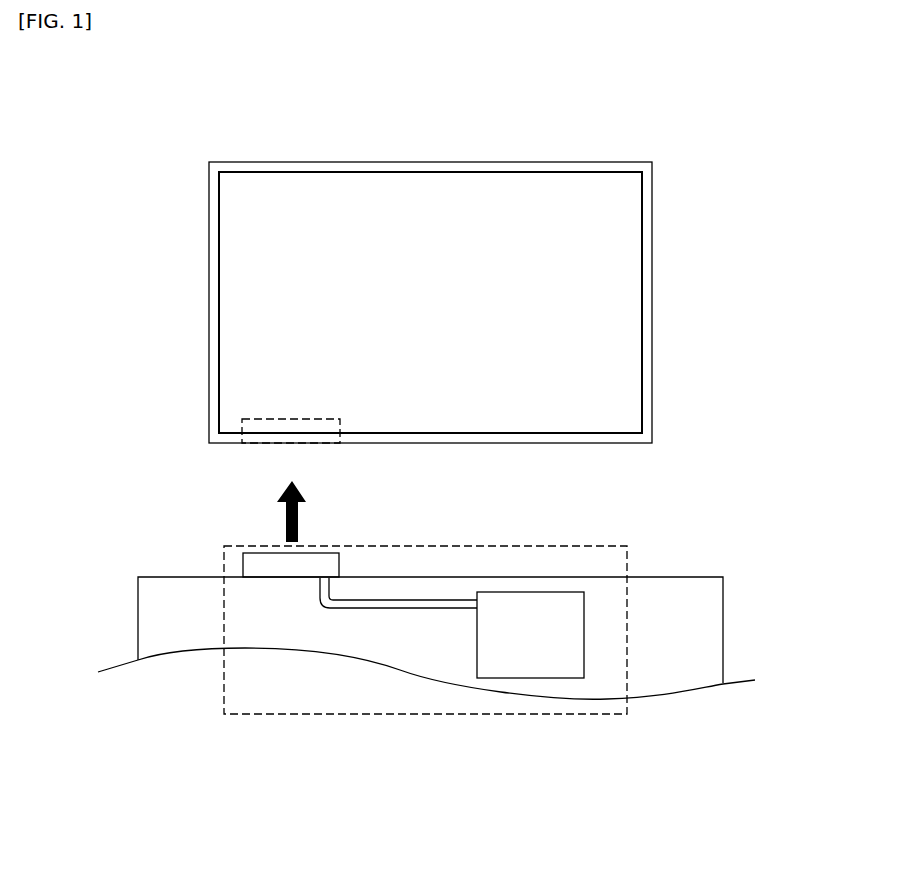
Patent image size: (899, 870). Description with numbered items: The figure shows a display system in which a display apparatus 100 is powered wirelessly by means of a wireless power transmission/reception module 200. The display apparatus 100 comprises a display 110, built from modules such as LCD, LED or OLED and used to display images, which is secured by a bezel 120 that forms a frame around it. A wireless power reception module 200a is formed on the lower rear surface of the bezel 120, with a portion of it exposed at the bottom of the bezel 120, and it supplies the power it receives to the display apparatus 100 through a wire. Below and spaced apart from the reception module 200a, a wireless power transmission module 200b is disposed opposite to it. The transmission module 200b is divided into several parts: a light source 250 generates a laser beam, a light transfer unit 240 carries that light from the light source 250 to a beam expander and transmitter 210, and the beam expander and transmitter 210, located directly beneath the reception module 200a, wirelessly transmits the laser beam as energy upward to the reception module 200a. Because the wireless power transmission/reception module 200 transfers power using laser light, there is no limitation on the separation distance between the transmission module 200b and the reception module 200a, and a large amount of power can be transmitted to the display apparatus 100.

The display apparatus 100 is at (481, 253).
The display 110 is at (625, 305).
The bezel 120 is at (644, 358).
The wireless power transmission/reception module 200 is at (396, 604).
The wireless power reception module 200a is at (268, 425).
The wireless power transmission module 200b is at (425, 635).
The beam expander and transmitter 210 is at (323, 565).
The light transfer unit 240 is at (387, 610).
The light source 250 is at (552, 680).